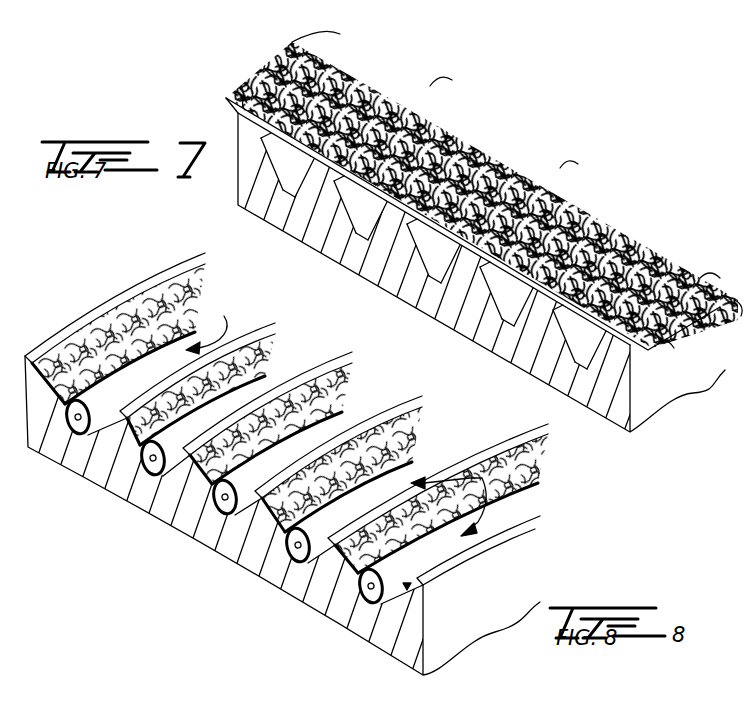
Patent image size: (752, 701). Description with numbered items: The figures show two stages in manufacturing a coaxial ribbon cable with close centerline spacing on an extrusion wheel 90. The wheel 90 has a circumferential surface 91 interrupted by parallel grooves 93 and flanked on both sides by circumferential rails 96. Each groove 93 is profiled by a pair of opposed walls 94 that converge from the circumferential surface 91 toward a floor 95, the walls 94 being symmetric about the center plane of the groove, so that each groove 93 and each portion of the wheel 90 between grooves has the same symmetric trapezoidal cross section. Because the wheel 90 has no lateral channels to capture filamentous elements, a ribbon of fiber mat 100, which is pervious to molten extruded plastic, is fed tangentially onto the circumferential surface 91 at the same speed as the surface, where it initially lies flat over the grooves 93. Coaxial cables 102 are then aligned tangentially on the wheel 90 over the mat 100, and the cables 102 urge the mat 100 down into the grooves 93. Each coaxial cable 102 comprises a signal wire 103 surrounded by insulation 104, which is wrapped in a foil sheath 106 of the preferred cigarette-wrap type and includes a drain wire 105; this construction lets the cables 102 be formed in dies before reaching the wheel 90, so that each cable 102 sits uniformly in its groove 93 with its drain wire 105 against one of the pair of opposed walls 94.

In FIG. 8, the wheel 90 is at (190, 533).
In FIG. 7, the circumferential surface 91 is at (363, 276).
In FIG. 7, the grooves 93 is at (298, 171).
In FIG. 8, the grooves 93 is at (301, 452).
In FIG. 7, the opposed walls 94 is at (355, 214).
In FIG. 8, the opposed walls 94 is at (70, 450).
In FIG. 7, the floor 95 is at (505, 322).
In FIG. 8, the floor 95 is at (135, 506).
In FIG. 7, the circumferential rails 96 is at (243, 124).
In FIG. 8, the circumferential rails 96 is at (85, 324).
In FIG. 7, the fiber mat 100 is at (278, 64).
In FIG. 8, the fiber mat 100 is at (290, 418).
In FIG. 8, the coaxial cables 102 is at (349, 412).
In FIG. 8, the signal wire 103 is at (350, 618).
In FIG. 8, the insulation 104 is at (312, 596).
In FIG. 8, the drain wire 105 is at (418, 596).
In FIG. 8, the foil sheath 106 is at (374, 610).